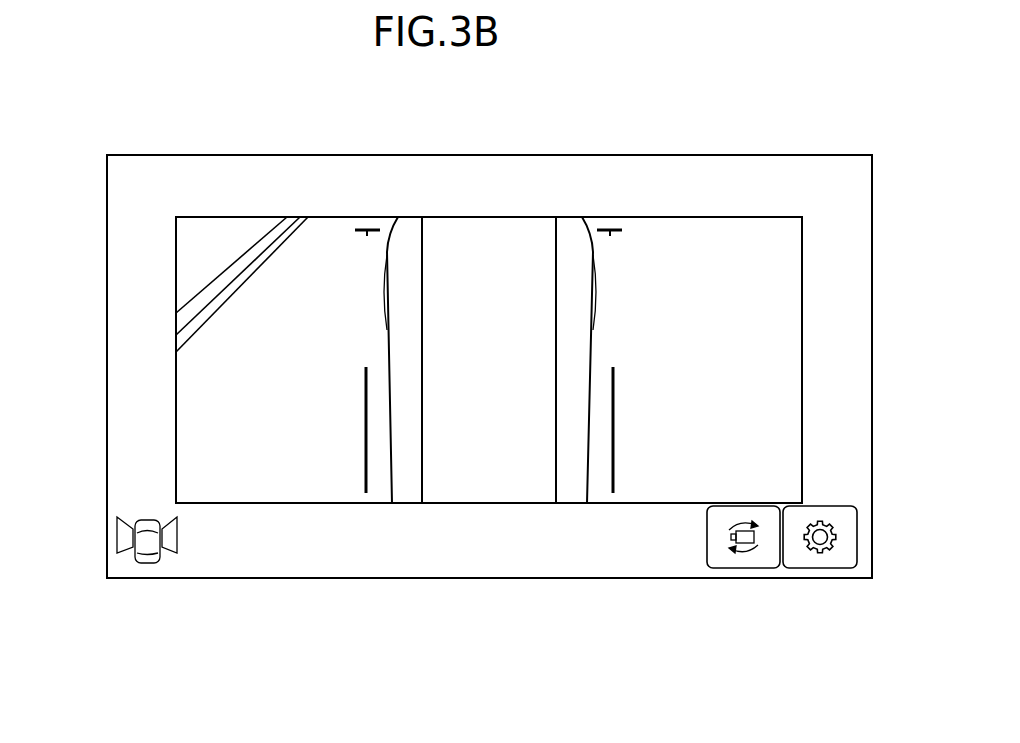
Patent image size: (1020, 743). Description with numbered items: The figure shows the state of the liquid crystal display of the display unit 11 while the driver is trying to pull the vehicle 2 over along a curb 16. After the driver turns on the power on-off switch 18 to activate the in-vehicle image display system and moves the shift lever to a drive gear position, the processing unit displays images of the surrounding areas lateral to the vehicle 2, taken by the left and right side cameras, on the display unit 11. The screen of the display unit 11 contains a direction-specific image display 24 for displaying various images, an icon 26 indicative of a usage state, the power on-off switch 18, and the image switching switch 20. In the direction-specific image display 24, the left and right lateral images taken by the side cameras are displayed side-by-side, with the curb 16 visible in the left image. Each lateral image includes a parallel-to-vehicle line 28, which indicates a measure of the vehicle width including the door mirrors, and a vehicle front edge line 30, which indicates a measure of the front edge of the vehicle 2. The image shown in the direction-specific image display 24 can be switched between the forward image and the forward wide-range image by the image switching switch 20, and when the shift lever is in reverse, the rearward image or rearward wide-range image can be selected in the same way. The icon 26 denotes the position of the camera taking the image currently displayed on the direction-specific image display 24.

The vehicle 2 is at (408, 485).
The display unit 11 is at (433, 154).
The curb 16 is at (213, 287).
The power on-off switch 18 is at (820, 570).
The image switching switch 20 is at (745, 570).
The direction-specific image display 24 is at (218, 216).
The icon 26 is at (143, 566).
The parallel-to-vehicle line 28 is at (365, 436).
The vehicle front edge line 30 is at (366, 237).